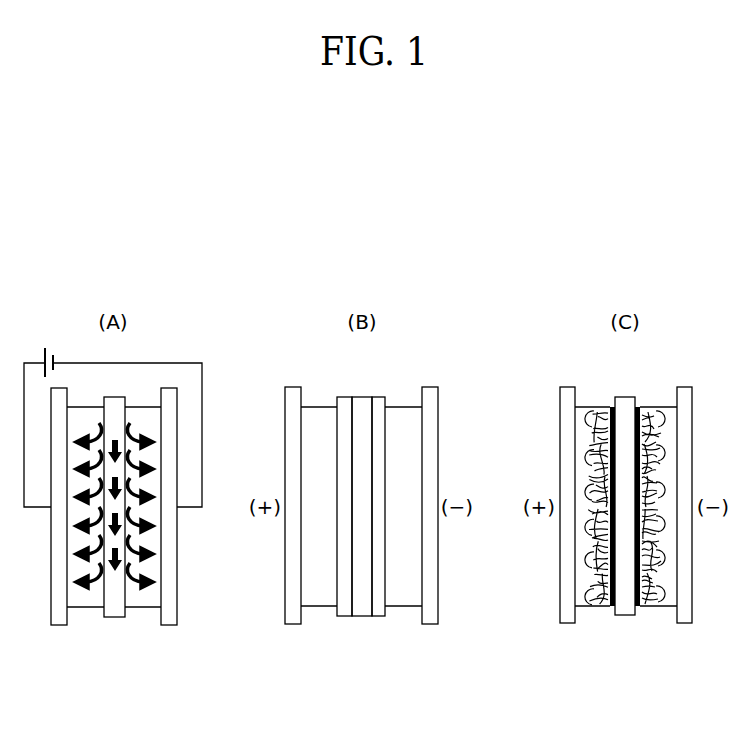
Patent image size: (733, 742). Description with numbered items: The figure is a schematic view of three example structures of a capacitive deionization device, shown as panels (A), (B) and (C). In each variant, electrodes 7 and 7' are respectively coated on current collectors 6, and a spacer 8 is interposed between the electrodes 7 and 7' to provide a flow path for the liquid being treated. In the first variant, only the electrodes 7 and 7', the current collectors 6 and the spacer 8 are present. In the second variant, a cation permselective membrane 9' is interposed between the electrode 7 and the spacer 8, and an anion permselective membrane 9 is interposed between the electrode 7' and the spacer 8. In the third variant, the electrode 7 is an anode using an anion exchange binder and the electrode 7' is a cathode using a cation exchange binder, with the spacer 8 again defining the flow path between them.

The current collector 6 is at (60, 625).
The electrode 7 is at (338, 549).
The electrode 7' is at (401, 549).
The spacer 8 is at (115, 617).
The anion permselective membrane 9 is at (379, 531).
The cation permselective membrane 9' is at (342, 531).